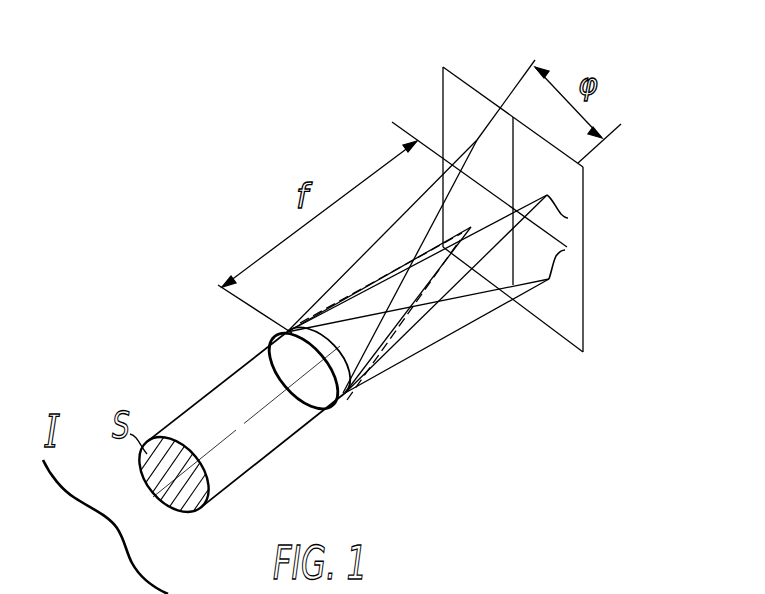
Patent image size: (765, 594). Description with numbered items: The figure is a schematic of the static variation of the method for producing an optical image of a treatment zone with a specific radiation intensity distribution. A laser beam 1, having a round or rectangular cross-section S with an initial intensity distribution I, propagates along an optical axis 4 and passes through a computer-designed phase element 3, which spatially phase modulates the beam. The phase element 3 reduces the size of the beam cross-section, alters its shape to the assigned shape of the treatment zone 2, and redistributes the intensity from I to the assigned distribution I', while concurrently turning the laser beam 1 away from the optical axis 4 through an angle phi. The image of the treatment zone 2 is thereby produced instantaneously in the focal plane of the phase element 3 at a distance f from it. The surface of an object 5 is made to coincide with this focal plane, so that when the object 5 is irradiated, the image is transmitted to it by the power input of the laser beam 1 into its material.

The laser beam 1 is at (197, 402).
The treatment zone 2 is at (568, 218).
The computer-designed phase element 3 is at (288, 331).
The optical axis 4 is at (148, 496).
The object 5 is at (577, 324).